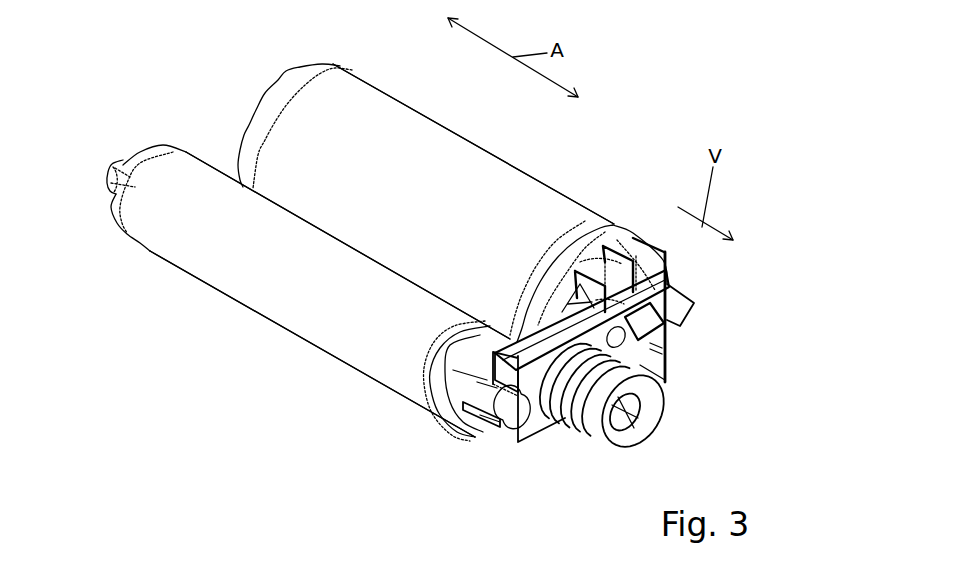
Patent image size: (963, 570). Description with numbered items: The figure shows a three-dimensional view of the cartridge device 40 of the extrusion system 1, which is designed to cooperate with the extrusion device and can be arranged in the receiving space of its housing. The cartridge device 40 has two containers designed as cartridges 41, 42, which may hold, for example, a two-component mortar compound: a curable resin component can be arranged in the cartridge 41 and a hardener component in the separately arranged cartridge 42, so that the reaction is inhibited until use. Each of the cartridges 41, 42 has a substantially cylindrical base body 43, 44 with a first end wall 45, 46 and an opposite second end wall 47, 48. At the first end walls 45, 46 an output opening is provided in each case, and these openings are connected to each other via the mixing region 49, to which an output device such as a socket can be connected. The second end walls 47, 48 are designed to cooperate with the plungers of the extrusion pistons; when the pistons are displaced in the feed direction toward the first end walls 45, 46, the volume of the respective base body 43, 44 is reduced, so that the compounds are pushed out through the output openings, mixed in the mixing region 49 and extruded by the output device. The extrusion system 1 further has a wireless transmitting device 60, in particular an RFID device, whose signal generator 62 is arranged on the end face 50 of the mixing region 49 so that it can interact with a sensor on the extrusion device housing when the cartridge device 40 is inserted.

The extrusion system 1 is at (636, 87).
The cartridge device 40 is at (578, 154).
The cartridge 41 is at (486, 137).
The cartridge 42 is at (191, 287).
The base body 43 is at (361, 110).
The base body 44 is at (252, 292).
The first end wall 45 is at (625, 250).
The first end wall 46 is at (460, 397).
The second end wall 47 is at (276, 79).
The second end wall 48 is at (147, 150).
The mixing region 49 is at (533, 420).
The end face 50 is at (640, 363).
The transmitting device 60 is at (670, 322).
The signal generator 62 is at (668, 337).